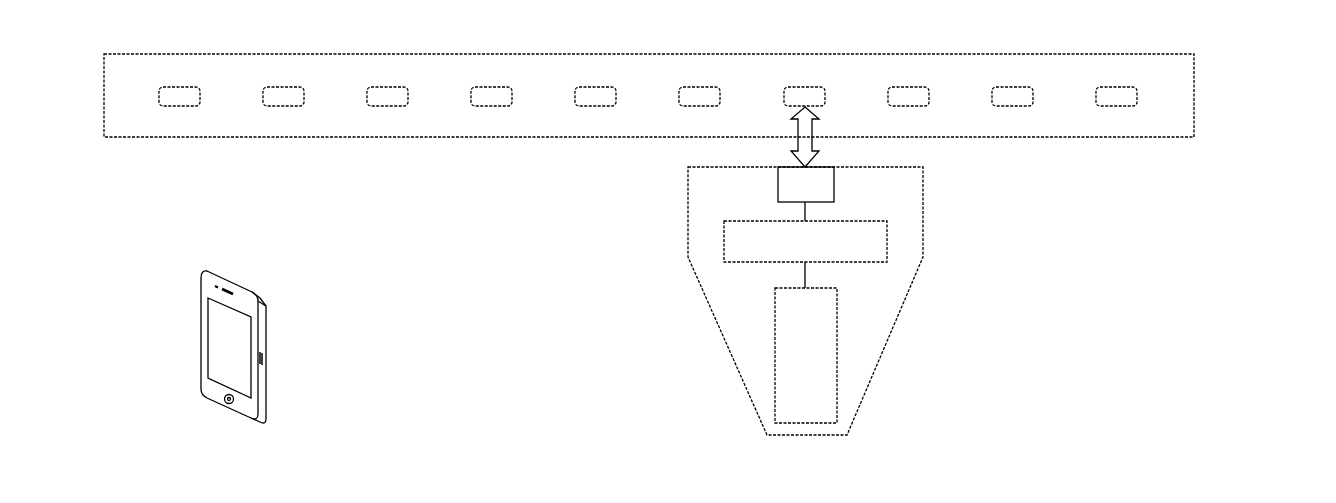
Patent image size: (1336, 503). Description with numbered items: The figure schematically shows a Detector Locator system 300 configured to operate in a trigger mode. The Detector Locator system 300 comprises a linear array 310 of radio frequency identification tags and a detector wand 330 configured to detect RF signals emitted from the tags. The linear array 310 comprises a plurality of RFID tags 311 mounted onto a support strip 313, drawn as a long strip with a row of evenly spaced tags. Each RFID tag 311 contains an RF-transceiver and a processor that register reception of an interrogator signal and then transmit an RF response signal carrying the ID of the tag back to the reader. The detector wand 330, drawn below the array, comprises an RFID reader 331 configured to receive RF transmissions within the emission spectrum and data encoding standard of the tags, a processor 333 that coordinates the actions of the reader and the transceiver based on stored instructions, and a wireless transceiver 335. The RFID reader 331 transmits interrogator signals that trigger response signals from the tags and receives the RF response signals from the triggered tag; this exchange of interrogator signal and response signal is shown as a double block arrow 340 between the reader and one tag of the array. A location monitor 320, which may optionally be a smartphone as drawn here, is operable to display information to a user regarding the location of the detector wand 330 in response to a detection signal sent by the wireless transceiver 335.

The Detector Locator system 300 is at (1112, 286).
The linear array 310 is at (1226, 120).
The RFID tag 311 is at (385, 87).
The support strip 313 is at (195, 54).
The location monitor 320 is at (258, 250).
The detector wand 330 is at (914, 324).
The RFID reader 331 is at (834, 183).
The processor 333 is at (780, 221).
The wireless transceiver 335 is at (795, 288).
The double block arrow 340 is at (815, 142).